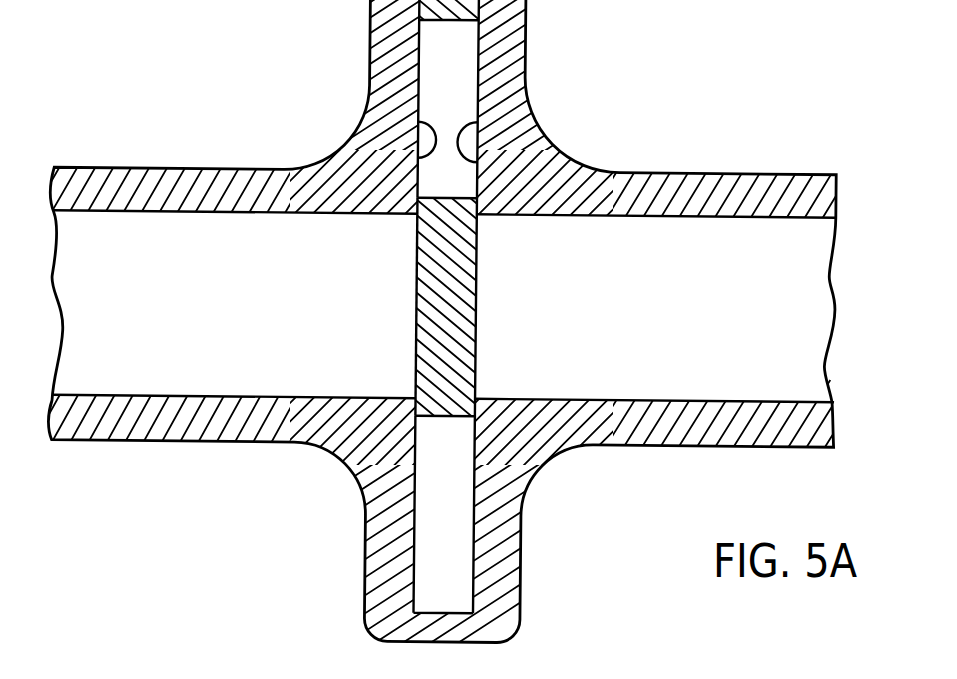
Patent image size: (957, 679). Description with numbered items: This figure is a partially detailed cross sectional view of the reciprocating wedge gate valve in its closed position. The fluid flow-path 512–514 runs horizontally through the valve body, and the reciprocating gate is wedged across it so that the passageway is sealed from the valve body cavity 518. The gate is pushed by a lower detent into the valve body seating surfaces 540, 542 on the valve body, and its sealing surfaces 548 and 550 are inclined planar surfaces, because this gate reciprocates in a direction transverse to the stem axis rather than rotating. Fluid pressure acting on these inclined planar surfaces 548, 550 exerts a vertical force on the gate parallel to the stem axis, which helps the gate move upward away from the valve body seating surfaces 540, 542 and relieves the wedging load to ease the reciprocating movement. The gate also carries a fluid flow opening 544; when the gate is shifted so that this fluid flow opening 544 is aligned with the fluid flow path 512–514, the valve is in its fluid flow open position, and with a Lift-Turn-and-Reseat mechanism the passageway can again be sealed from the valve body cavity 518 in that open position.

The fluid flow path 512 is at (814, 318).
The fluid flow path 514 is at (117, 316).
The valve body cavity 518 is at (438, 513).
The valve body seating surface 540 is at (478, 167).
The valve body seating surface 542 is at (428, 157).
The fluid flow opening 544 is at (464, 92).
The inclined planar sealing surface 548 is at (478, 263).
The inclined planar sealing surface 550 is at (416, 263).